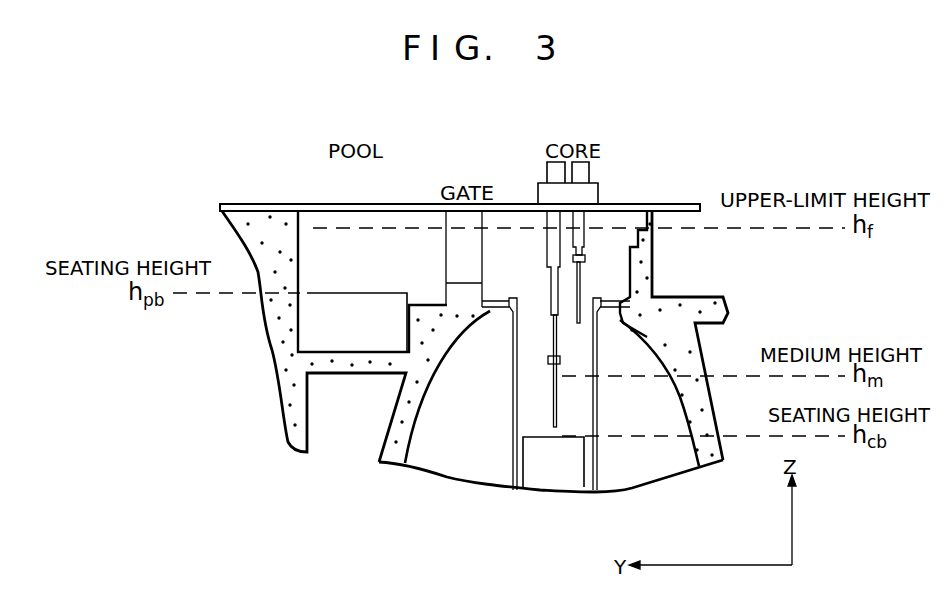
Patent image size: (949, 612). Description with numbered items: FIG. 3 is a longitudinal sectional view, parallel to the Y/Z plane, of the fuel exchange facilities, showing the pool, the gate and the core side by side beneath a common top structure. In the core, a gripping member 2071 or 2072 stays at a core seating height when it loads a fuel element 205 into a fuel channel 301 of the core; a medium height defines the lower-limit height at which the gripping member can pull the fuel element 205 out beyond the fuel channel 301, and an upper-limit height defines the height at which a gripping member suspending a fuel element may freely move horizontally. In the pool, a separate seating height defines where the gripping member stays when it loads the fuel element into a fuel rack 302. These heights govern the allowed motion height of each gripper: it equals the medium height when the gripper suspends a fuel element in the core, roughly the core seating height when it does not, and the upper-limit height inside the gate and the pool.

The fuel rack 302 is at (353, 293).
The fuel channel 301 is at (551, 489).
The fuel element 205 is at (553, 408).
The gripping member 2072 is at (548, 362).
The gripping member 2071 is at (585, 258).